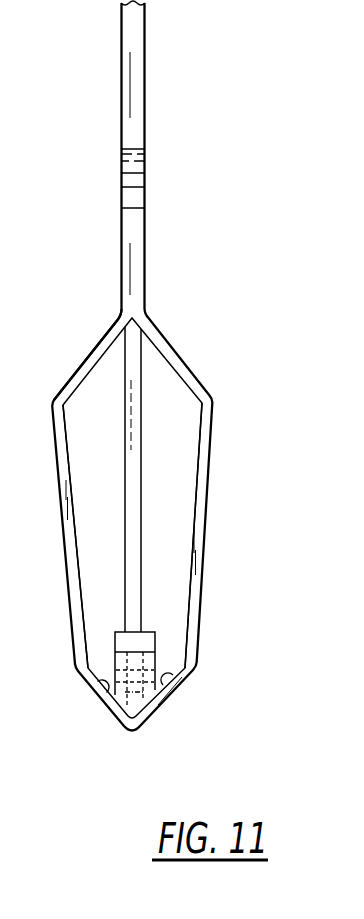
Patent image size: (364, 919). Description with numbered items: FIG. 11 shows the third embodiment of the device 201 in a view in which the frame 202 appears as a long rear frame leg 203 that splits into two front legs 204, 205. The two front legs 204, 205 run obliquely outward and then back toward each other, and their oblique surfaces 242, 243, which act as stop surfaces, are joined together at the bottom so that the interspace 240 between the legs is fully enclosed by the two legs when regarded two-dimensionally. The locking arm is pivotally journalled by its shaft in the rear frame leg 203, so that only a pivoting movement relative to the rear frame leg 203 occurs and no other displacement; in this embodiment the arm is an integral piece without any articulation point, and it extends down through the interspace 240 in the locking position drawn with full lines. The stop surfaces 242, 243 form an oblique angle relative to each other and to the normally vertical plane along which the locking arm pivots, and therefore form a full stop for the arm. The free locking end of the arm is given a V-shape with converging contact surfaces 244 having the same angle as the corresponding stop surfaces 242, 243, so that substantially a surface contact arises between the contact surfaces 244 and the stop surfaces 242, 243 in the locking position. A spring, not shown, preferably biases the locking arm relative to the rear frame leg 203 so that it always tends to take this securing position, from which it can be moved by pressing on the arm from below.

The device 201 is at (222, 379).
The frame 202 is at (222, 416).
The rear frame leg 203 is at (138, 457).
The front leg 204 is at (70, 551).
The front leg 205 is at (203, 499).
The interspace 240 is at (173, 543).
The oblique surface 242 is at (105, 700).
The oblique surface 243 is at (170, 702).
The converging contact surfaces 244 is at (125, 725).